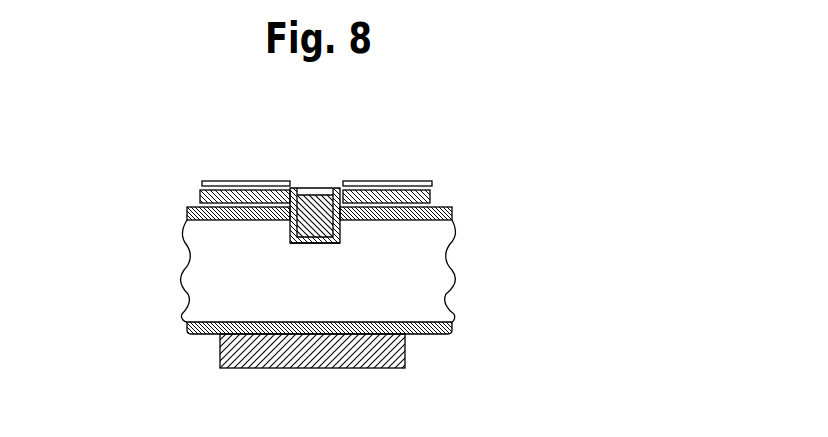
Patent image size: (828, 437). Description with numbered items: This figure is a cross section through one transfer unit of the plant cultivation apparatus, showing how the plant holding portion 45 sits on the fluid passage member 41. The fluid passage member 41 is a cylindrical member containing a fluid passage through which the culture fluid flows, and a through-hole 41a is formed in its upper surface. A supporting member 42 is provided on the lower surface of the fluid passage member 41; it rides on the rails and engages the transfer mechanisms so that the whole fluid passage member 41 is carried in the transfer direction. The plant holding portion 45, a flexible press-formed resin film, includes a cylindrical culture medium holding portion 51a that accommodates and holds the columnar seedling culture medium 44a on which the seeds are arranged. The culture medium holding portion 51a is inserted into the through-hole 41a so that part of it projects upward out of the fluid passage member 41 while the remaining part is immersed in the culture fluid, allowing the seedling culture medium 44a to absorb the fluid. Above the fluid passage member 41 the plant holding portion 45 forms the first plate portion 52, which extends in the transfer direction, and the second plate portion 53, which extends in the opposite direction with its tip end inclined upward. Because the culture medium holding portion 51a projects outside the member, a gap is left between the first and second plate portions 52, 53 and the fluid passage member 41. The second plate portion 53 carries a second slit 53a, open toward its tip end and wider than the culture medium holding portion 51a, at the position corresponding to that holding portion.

The fluid passage member 41 is at (433, 337).
The through-hole 41a is at (310, 245).
The supporting member 42 is at (255, 370).
The seedling culture medium 44a is at (322, 190).
The plant holding portion 45 is at (238, 179).
The culture medium holding portion 51a is at (340, 232).
The first plate portion 52 is at (407, 222).
The second plate portion 53 is at (400, 200).
The second slit 53a is at (292, 187).